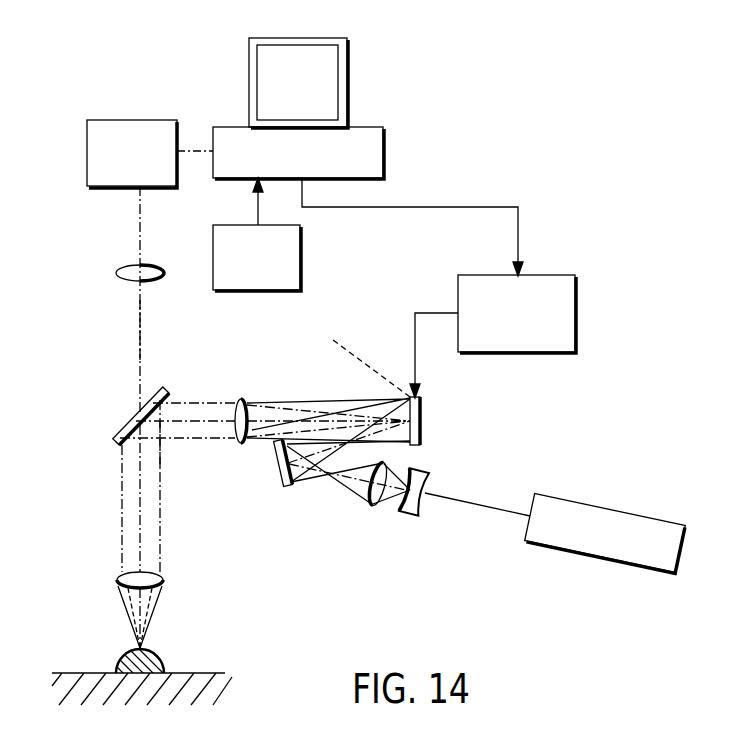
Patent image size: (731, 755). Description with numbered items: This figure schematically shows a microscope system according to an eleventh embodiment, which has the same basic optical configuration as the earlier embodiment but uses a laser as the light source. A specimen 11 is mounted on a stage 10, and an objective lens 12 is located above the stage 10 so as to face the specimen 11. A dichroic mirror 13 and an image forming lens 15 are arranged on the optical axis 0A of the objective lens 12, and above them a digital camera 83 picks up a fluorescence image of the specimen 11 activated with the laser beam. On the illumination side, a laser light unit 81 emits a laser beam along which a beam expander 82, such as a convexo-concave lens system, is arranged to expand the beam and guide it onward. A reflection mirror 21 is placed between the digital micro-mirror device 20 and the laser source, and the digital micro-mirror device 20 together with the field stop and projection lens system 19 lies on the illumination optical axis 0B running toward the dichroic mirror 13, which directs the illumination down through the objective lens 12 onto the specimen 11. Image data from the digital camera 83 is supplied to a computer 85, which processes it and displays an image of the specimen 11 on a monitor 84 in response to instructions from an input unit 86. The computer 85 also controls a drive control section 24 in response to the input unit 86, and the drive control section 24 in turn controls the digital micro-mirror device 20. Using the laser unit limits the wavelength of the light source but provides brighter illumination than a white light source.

The digital camera 83 is at (87, 165).
The monitor 84 is at (348, 80).
The computer 85 is at (385, 155).
The input unit 86 is at (302, 255).
The drive control section 24 is at (577, 313).
The image forming lens 15 is at (116, 273).
The optical axis 0A is at (140, 327).
The dichroic mirror 13 is at (112, 441).
The field stop and projection lens system 19 is at (236, 398).
The illumination optical axis 0B is at (183, 424).
The digital micro-mirror device 20 is at (422, 418).
The reflection mirror 21 is at (287, 490).
The beam expander 82 is at (372, 507).
The laser light unit 81 is at (602, 507).
The objective lens 12 is at (117, 583).
The specimen 11 is at (118, 664).
The stage 10 is at (210, 672).